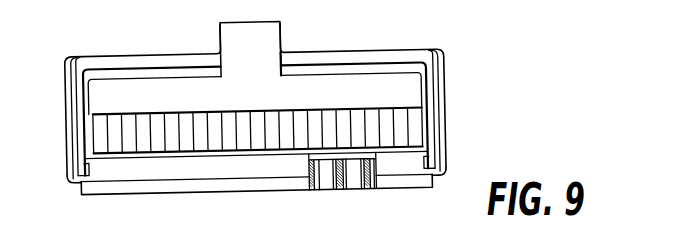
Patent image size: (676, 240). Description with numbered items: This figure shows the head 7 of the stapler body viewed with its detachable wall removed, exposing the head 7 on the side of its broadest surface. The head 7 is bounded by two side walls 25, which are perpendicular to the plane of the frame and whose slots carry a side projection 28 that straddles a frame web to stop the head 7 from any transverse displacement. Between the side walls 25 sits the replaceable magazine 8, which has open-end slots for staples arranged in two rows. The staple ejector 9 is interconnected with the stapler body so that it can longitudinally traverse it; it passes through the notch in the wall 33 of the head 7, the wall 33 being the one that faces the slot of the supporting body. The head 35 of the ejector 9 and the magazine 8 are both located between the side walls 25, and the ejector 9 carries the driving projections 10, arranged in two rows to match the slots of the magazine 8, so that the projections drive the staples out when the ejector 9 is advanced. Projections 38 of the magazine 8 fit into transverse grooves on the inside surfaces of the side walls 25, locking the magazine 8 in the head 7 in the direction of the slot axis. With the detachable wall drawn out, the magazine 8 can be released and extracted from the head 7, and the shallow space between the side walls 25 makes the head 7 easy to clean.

The head 7 is at (452, 96).
The replaceable magazine 8 is at (280, 168).
The staple ejector 9 is at (268, 50).
The driving projections 10 is at (352, 122).
The side walls 25 is at (468, 122).
The side projection 28 is at (236, 88).
The wall 33 is at (333, 58).
The head of the ejector 35 is at (382, 83).
The projections 38 is at (84, 167).